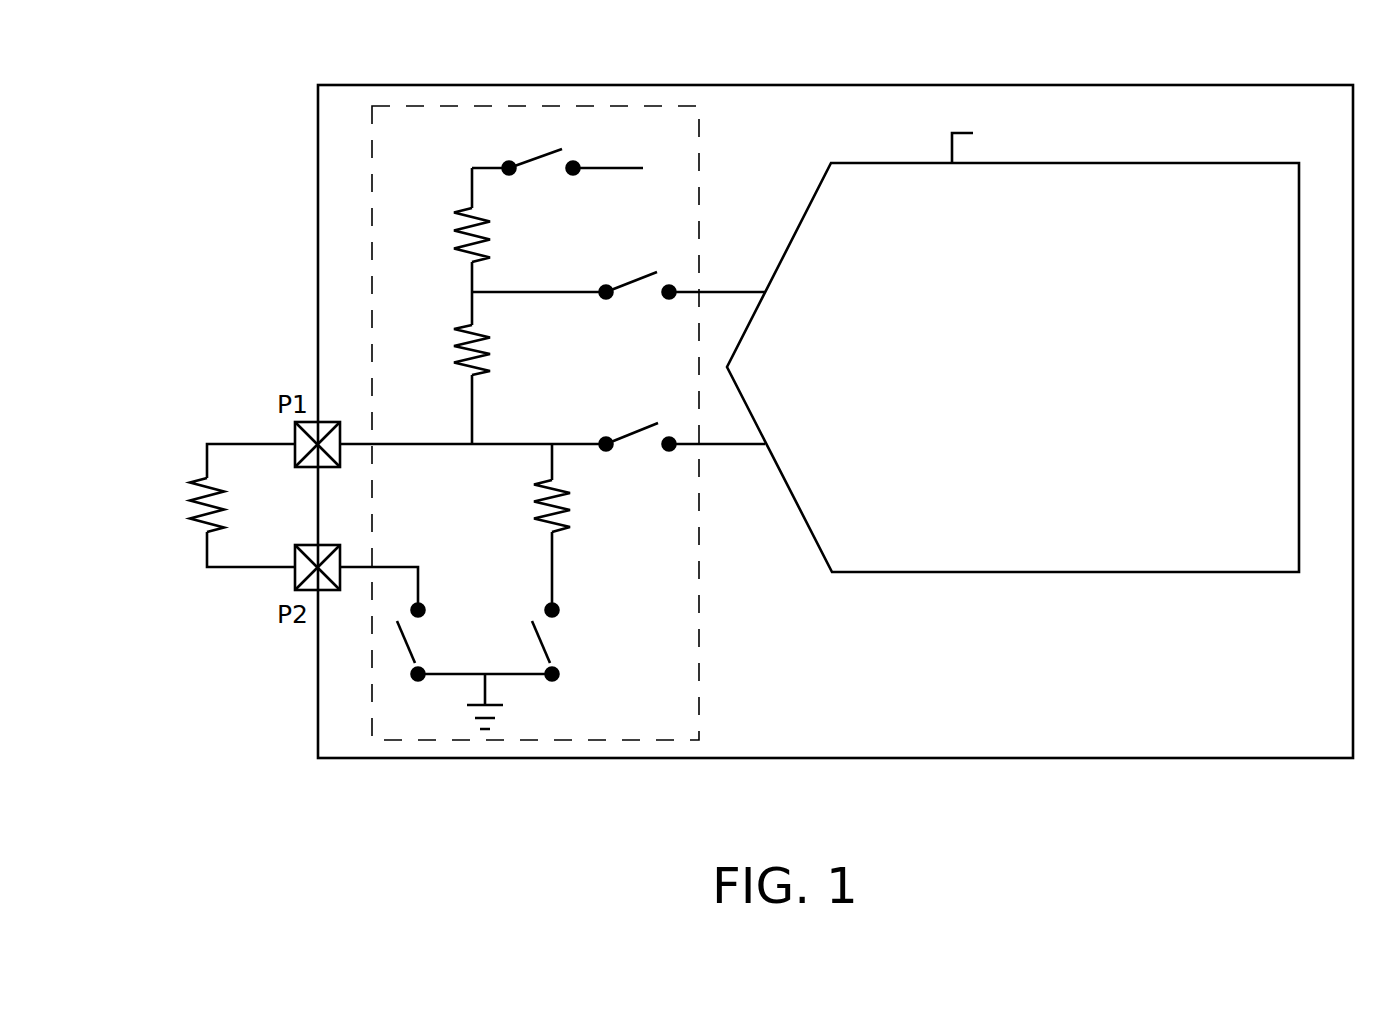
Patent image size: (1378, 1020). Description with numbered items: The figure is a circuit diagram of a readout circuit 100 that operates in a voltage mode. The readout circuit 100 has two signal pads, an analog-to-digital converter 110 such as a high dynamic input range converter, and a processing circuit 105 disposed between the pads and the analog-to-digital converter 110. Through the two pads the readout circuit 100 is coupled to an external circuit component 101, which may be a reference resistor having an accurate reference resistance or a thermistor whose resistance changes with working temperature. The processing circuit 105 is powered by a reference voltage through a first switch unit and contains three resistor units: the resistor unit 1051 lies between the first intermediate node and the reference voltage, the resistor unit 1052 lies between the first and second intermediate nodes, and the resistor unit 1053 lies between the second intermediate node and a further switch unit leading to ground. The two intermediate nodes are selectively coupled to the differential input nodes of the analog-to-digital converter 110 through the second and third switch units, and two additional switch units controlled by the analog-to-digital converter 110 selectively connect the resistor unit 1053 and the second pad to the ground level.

The readout circuit 100 is at (852, 85).
The external circuit component 101 is at (185, 512).
The processing circuit 105 is at (579, 423).
The resistor unit 1051 is at (455, 227).
The resistor unit 1052 is at (453, 357).
The resistor unit 1053 is at (535, 507).
The analog-to-digital converter 110 is at (1042, 572).